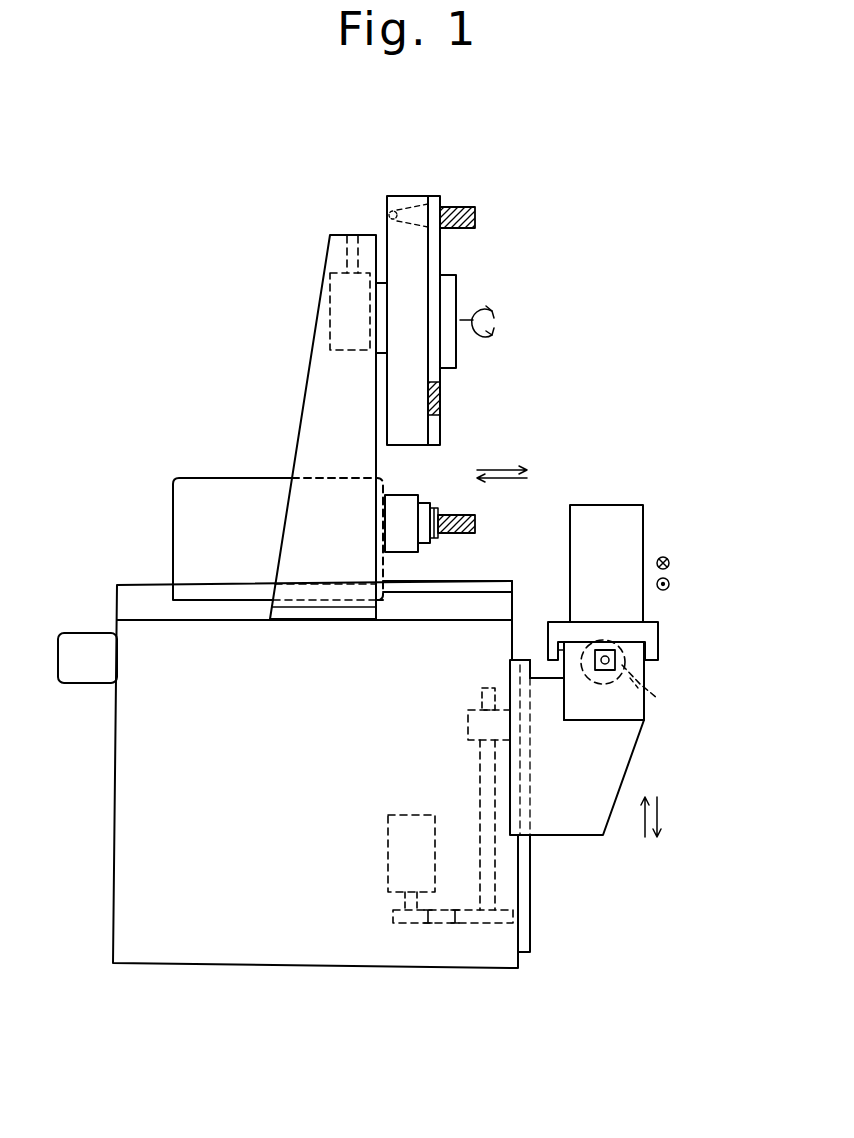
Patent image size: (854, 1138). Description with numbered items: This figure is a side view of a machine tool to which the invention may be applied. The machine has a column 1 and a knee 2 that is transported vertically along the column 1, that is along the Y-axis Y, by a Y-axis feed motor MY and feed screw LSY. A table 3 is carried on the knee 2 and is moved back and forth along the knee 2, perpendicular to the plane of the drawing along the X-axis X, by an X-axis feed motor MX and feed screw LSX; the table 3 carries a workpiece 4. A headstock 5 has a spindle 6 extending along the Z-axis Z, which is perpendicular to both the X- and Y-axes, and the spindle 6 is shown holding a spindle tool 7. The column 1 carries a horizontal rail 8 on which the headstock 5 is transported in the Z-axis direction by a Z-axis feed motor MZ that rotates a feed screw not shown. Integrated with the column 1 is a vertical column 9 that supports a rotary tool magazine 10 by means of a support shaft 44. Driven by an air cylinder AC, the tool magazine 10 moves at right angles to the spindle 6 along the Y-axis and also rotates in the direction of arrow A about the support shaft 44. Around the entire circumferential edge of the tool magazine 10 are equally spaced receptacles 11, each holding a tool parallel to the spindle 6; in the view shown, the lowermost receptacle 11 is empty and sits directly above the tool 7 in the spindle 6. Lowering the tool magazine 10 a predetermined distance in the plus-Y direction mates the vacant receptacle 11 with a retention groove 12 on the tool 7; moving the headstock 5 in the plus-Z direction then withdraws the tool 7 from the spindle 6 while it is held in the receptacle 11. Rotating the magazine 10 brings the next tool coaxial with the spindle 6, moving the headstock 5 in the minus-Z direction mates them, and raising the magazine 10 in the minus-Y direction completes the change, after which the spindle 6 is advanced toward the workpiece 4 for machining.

The column 1 is at (393, 962).
The knee 2 is at (575, 822).
The table 3 is at (648, 630).
The workpiece 4 is at (612, 505).
The headstock 5 is at (268, 487).
The spindle 6 is at (427, 542).
The spindle tool 7 is at (470, 530).
The horizontal rail 8 is at (508, 583).
The vertical column 9 is at (318, 287).
The tool magazine 10 is at (438, 195).
The receptacles 11 is at (430, 425).
The retention groove 12 is at (425, 500).
The support shaft 44 is at (380, 283).
The arrow A is at (485, 316).
The air cylinder AC is at (340, 293).
The X-axis feed motor MX is at (627, 663).
The Y-axis feed motor MY is at (425, 828).
The Z-axis feed motor MZ is at (80, 672).
The X-axis feed screw LSX is at (657, 698).
The Y-axis feed screw LSY is at (480, 775).
The X-axis X is at (680, 574).
The Y-axis Y is at (655, 817).
The Z-axis Z is at (502, 474).